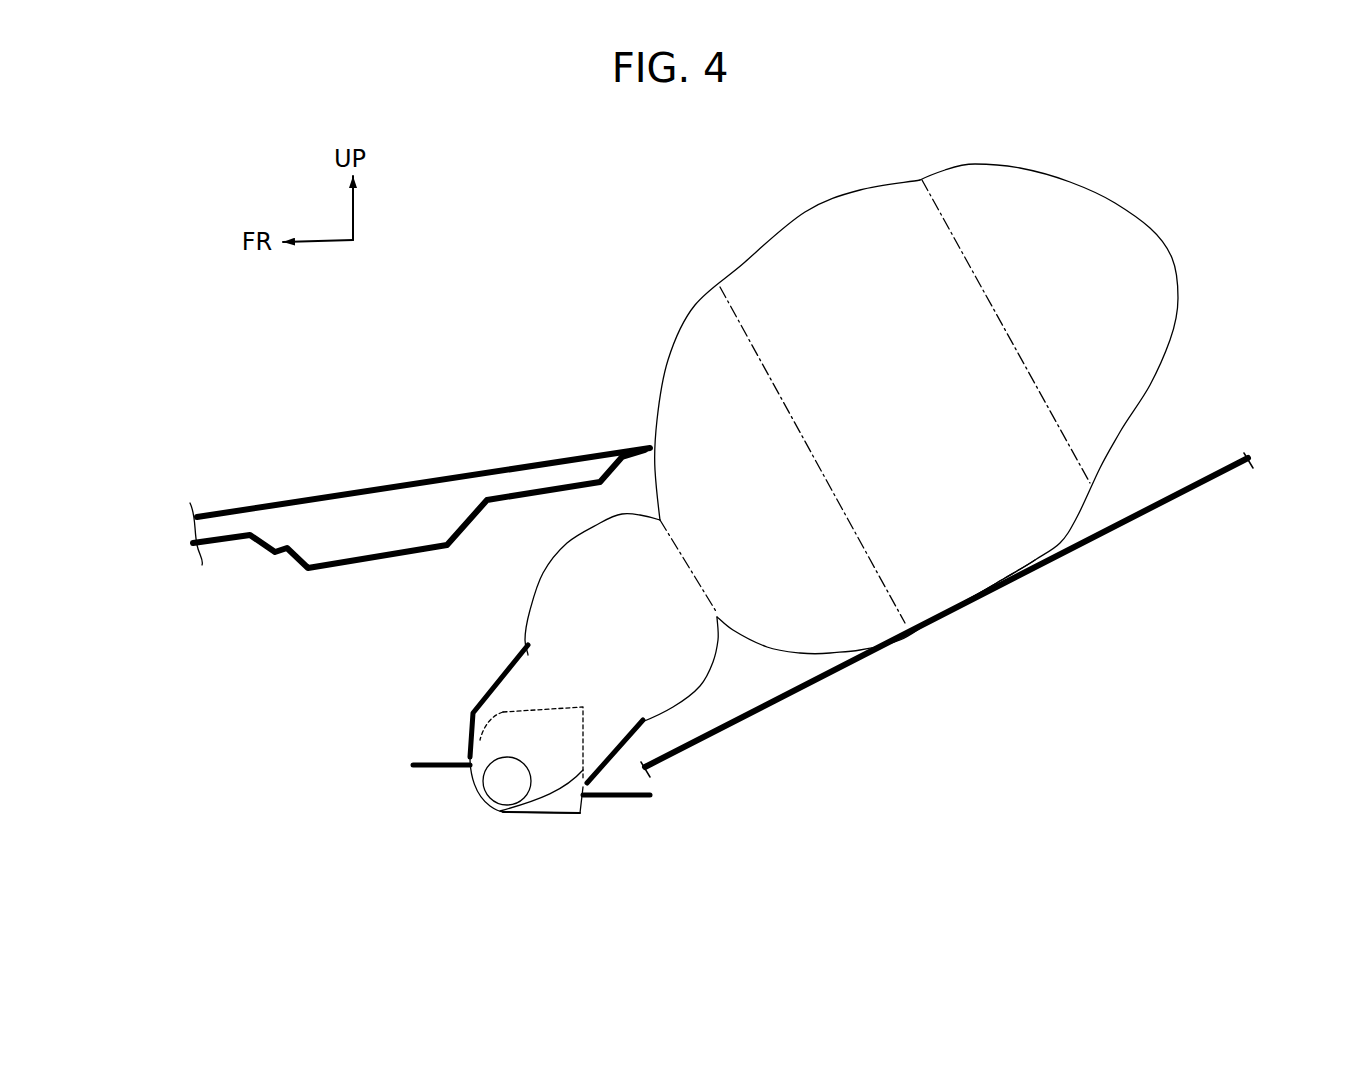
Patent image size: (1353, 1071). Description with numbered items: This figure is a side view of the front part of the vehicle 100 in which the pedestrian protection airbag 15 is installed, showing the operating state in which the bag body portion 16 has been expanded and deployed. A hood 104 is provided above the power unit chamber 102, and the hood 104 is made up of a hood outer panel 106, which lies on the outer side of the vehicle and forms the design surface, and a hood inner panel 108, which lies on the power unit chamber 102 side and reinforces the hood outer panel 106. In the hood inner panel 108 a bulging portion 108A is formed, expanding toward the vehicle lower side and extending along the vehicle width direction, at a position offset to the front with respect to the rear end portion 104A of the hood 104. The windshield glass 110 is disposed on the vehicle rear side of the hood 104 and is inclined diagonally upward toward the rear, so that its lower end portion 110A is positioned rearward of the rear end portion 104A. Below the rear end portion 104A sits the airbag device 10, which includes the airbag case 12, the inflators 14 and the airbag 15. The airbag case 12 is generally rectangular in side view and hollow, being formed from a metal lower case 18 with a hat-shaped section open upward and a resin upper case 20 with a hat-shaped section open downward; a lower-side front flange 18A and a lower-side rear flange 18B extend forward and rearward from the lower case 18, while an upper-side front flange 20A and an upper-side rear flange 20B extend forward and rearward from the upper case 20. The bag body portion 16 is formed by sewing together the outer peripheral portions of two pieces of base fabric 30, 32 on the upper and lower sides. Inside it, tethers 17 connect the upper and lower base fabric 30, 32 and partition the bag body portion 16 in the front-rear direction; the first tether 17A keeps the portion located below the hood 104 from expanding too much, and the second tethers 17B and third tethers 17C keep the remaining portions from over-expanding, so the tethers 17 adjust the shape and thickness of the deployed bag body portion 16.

The airbag device 10 is at (559, 790).
The airbag case 12 is at (540, 821).
The inflators 14 is at (477, 831).
The pedestrian protection airbag 15 is at (629, 191).
The bag body portion 16 is at (628, 433).
The tethers 17 is at (985, 473).
The first tether 17A is at (809, 643).
The second tethers 17B is at (920, 506).
The third tethers 17C is at (1116, 380).
The lower case 18 is at (511, 839).
The lower-side front flange 18A is at (373, 802).
The lower-side rear flange 18B is at (664, 847).
The upper case 20 is at (571, 749).
The upper-side front flange 20A is at (415, 701).
The upper-side rear flange 20B is at (714, 786).
The base fabric 30 is at (916, 381).
The base fabric 32 is at (1082, 578).
The vehicle 100 is at (263, 358).
The power unit chamber 102 is at (270, 692).
The hood 104 is at (482, 389).
The rear end portion 104A is at (595, 392).
The hood outer panel 106 is at (420, 465).
The hood inner panel 108 is at (419, 538).
The bulging portion 108A is at (391, 600).
The windshield glass 110 is at (973, 530).
The lower end portion 110A is at (1210, 422).